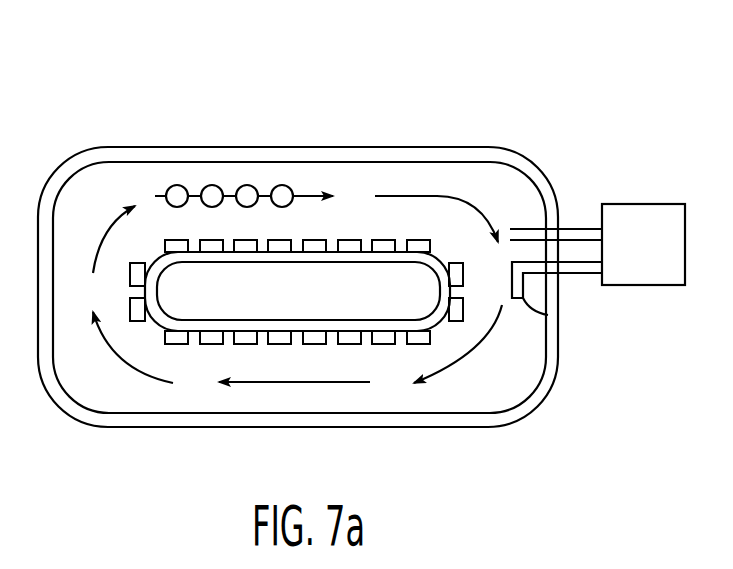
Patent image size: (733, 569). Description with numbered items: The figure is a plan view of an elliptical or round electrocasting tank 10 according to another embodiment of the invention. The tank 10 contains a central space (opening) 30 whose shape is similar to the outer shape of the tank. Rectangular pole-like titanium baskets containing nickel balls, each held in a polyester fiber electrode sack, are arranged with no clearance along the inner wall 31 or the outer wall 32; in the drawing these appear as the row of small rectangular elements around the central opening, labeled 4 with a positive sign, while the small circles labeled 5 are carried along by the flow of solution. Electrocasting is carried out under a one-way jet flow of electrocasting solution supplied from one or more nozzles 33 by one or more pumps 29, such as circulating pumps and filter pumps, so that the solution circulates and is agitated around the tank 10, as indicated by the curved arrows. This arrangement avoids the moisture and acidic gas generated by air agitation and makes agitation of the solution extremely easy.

The electrode (positive) 4 is at (294, 240).
The particles 5 is at (174, 194).
The electrocasting tank 10 is at (447, 147).
The pump 29 is at (648, 218).
The space (opening) 30 is at (240, 290).
The inner wall 31 is at (435, 345).
The outer wall 32 is at (550, 377).
The nozzle 33 is at (530, 300).